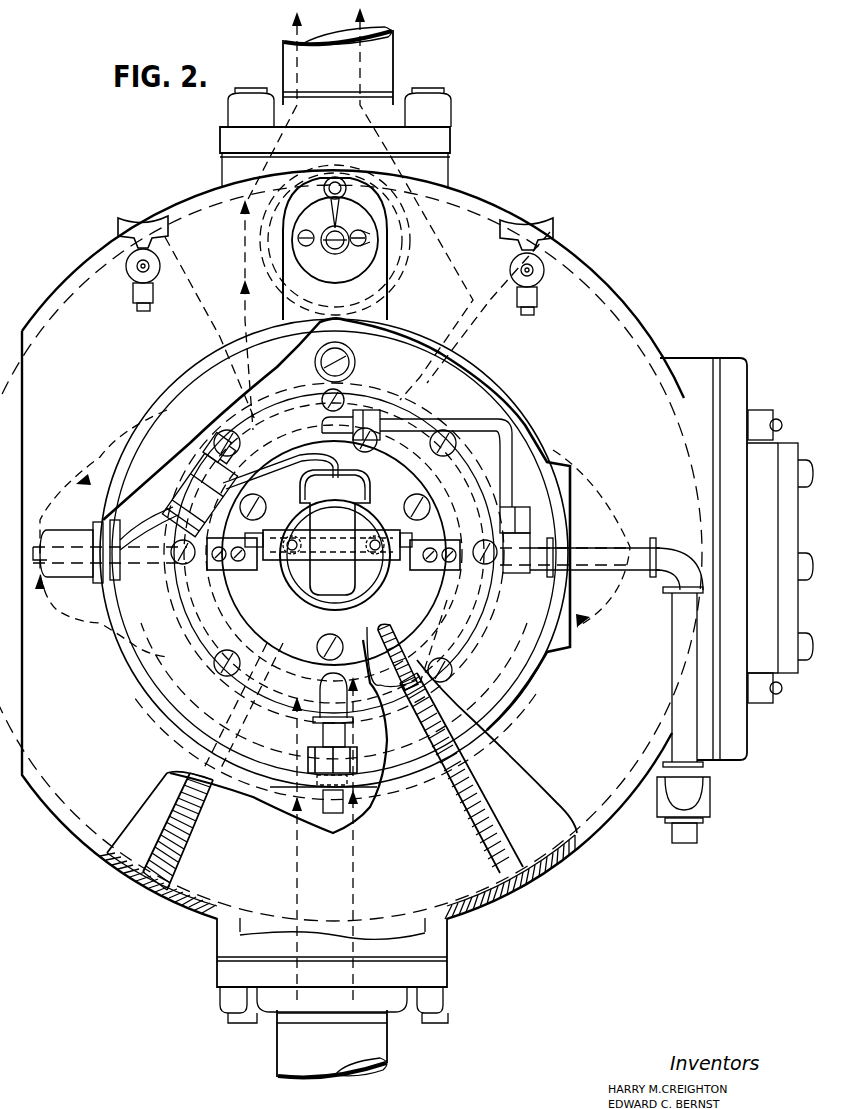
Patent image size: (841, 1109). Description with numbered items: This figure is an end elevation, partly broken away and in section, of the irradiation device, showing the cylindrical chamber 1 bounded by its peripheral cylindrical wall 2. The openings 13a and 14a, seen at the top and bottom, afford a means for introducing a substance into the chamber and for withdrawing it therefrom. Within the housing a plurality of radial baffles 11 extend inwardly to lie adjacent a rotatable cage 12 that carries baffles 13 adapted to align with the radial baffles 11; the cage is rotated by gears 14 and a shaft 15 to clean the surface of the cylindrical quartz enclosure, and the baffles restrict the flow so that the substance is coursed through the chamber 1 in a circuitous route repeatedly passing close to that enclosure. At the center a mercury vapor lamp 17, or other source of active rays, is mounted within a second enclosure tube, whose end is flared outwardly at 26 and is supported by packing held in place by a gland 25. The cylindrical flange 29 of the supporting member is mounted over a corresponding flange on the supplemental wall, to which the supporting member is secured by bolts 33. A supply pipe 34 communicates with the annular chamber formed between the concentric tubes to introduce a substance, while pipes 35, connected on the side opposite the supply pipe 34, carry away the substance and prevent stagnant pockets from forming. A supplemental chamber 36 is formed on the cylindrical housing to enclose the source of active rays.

The cylindrical chamber 1 is at (577, 332).
The peripheral cylindrical wall 2 is at (432, 176).
The radial baffles 11 is at (200, 322).
The rotatable cage 12 is at (387, 745).
The baffles 13 is at (394, 708).
The opening 13a is at (380, 67).
The gears 14 is at (418, 258).
The opening 14a is at (360, 1050).
The shaft 15 is at (335, 255).
The mercury vapor lamp 17 is at (340, 512).
The gland 25 is at (437, 607).
The flared portion of tube 26 is at (295, 583).
The cylindrical flange 29 is at (192, 628).
The bolts 33 is at (226, 666).
The supply pipe 34 is at (323, 736).
The pipes 35 is at (425, 428).
The supplemental chamber 36 is at (163, 693).